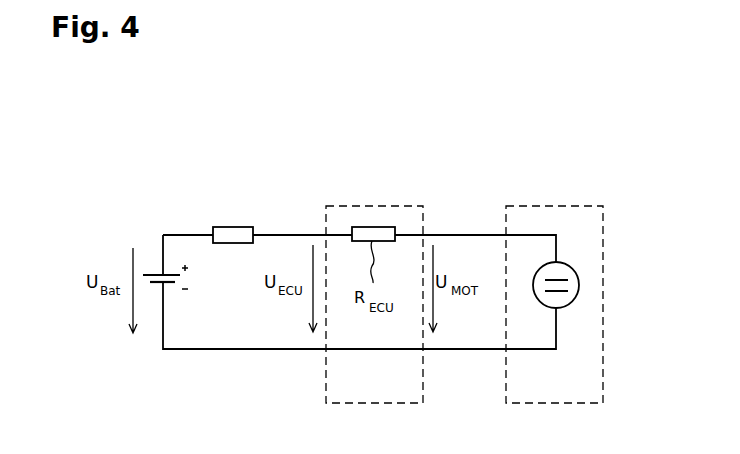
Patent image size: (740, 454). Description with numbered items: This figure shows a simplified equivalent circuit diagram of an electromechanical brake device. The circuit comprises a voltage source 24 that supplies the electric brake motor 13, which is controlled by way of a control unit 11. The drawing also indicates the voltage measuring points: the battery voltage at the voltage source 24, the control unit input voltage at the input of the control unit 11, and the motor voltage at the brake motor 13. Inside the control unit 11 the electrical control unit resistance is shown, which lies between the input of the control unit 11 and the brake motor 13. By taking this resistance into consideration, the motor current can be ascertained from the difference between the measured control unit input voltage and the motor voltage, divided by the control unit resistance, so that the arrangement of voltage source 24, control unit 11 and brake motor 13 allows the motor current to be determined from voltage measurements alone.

The voltage source 24 is at (155, 272).
The control unit 11 is at (368, 206).
The electric brake motor 13 is at (550, 206).